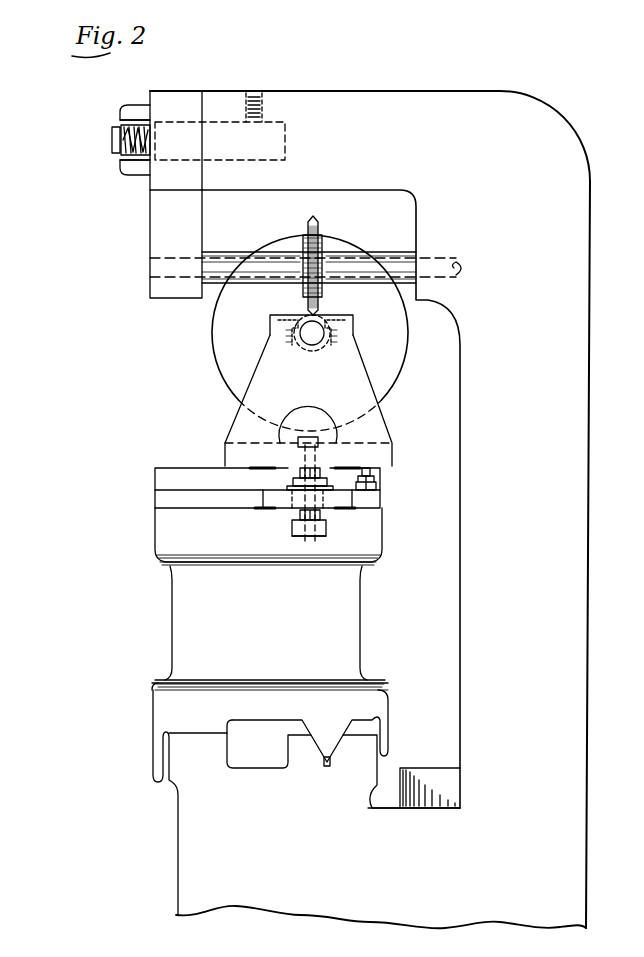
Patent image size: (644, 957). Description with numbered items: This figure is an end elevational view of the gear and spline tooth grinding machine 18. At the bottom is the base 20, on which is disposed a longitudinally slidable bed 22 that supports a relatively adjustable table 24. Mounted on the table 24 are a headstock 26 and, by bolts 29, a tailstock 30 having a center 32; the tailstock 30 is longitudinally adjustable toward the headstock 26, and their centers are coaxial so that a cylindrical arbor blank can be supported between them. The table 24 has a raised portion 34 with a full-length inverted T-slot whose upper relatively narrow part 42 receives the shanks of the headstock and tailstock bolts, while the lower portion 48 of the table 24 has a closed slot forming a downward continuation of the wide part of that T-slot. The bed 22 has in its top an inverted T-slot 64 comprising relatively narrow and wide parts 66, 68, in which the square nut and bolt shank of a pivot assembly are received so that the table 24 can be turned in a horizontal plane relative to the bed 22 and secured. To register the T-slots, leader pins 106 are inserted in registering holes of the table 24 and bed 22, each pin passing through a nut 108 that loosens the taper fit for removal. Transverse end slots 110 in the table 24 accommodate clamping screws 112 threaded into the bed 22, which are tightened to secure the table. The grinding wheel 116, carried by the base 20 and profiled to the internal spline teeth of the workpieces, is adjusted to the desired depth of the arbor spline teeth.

The gear and spline tooth grinding machine 18 is at (85, 278).
The base 20 is at (176, 842).
The bed 22 is at (168, 627).
The table 24 is at (166, 512).
The headstock 26 is at (213, 333).
The tailstock bolts 29 is at (311, 440).
The tailstock 30 is at (380, 428).
The tailstock center 32 is at (312, 347).
The raised portion 34 is at (158, 468).
The upper relatively narrow part 42 is at (300, 470).
The lower portion 48 is at (158, 492).
The inverted T-slot 64 is at (328, 524).
The relatively narrow part 66 is at (300, 532).
The relatively wide part 68 is at (300, 515).
The leader pins 106 is at (385, 466).
The nut 108 is at (375, 484).
The transverse end slots 110 is at (356, 497).
The clamping screws 112 is at (326, 478).
The grinding wheel 116 is at (318, 225).